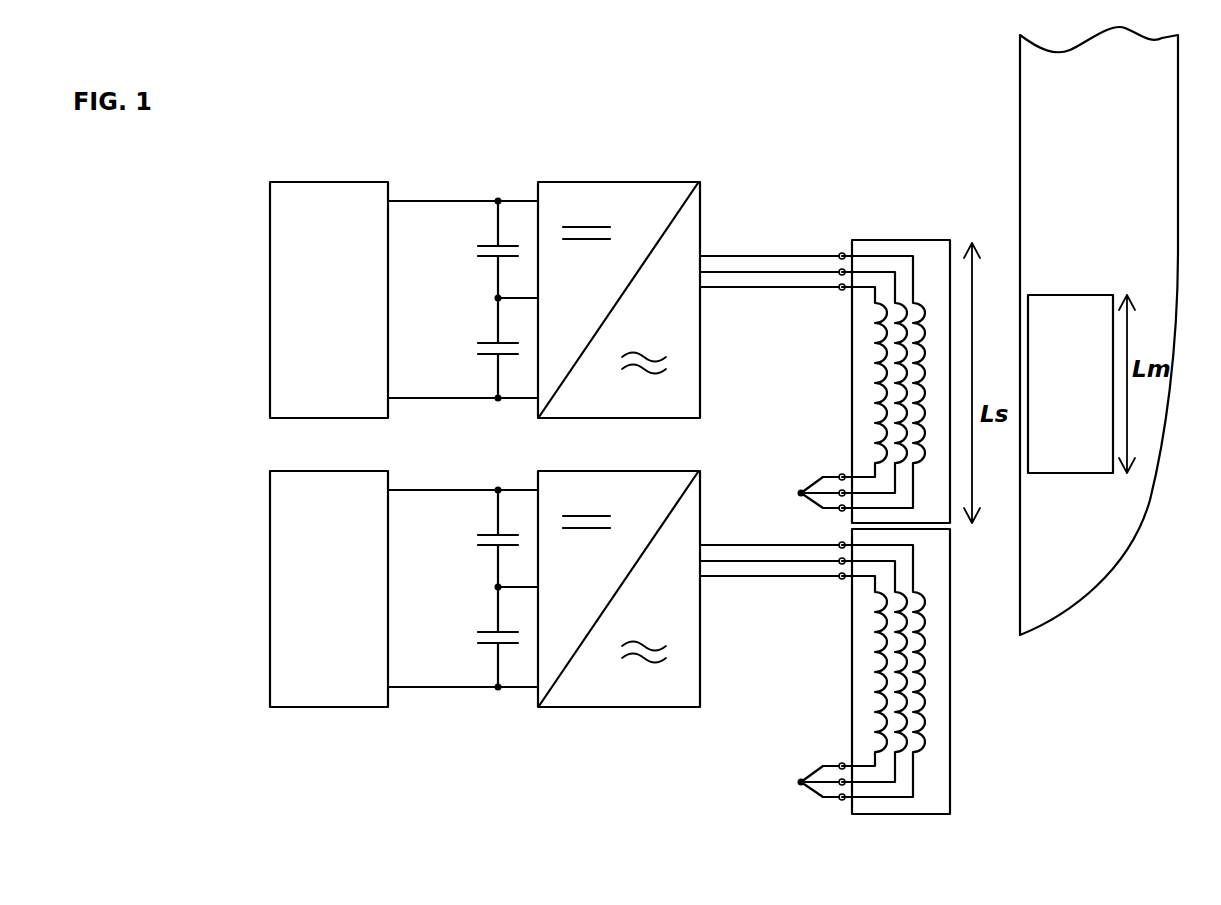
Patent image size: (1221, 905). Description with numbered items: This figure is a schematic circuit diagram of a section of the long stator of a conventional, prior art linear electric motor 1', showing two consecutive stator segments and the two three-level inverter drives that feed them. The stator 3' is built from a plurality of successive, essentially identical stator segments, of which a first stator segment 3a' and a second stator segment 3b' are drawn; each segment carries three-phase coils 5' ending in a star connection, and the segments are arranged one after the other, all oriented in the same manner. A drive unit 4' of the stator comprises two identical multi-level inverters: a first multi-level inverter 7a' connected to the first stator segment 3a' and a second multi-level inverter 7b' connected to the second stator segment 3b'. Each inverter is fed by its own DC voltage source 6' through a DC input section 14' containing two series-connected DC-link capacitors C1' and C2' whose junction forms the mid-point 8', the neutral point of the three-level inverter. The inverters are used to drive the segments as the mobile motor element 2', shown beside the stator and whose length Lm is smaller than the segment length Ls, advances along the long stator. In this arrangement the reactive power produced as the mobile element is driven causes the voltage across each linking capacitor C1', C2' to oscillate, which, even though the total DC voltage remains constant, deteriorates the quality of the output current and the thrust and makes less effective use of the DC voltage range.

The linear electric motor 1' is at (711, 75).
The mobile motor element 2' is at (1110, 331).
The stator 3' is at (852, 493).
The first stator segment 3a' is at (812, 382).
The second stator segment 3b' is at (812, 671).
The drive unit 4' is at (551, 462).
The coils 5' is at (955, 715).
The DC voltage source 6' is at (281, 444).
The first multi-level inverter 7a' is at (665, 295).
The second multi-level inverter 7b' is at (663, 593).
The mid-point 8' is at (473, 442).
The DC input section 14' is at (463, 454).
The first DC-link capacitor C1' is at (475, 394).
The second DC-link capacitor C2' is at (475, 495).